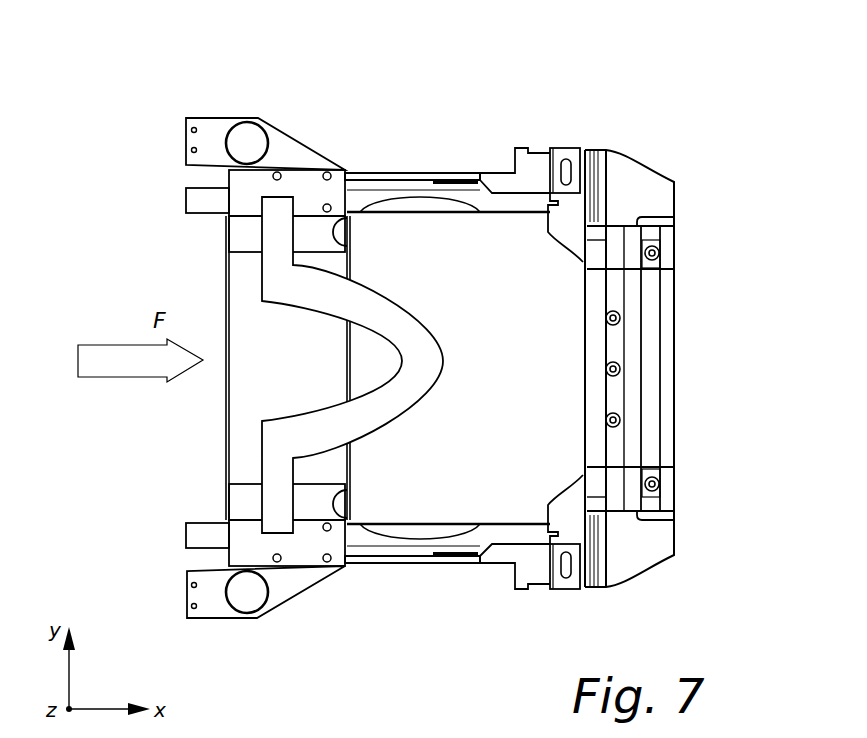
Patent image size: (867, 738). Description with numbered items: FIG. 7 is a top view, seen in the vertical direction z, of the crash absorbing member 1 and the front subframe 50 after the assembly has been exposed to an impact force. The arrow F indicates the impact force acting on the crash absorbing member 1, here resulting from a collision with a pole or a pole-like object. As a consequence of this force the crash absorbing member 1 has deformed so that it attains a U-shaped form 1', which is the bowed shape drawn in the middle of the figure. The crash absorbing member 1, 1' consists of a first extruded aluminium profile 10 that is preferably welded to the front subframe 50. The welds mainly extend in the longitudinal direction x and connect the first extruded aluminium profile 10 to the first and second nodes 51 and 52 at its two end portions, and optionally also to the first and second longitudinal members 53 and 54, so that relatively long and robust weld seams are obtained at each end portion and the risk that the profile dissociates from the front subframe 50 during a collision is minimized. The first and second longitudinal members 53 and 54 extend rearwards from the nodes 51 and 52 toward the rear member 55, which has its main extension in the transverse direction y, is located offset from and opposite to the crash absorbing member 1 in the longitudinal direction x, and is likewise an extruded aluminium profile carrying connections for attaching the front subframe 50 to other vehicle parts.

The crash absorbing member 1 is at (236, 368).
The first extruded aluminium profile 10 is at (236, 368).
The U-shaped form 1' is at (290, 365).
The front subframe 50 is at (565, 150).
The first node 51 is at (218, 118).
The second node 52 is at (262, 618).
The first longitudinal member 53 is at (393, 173).
The second longitudinal member 54 is at (392, 566).
The rear member 55 is at (650, 376).